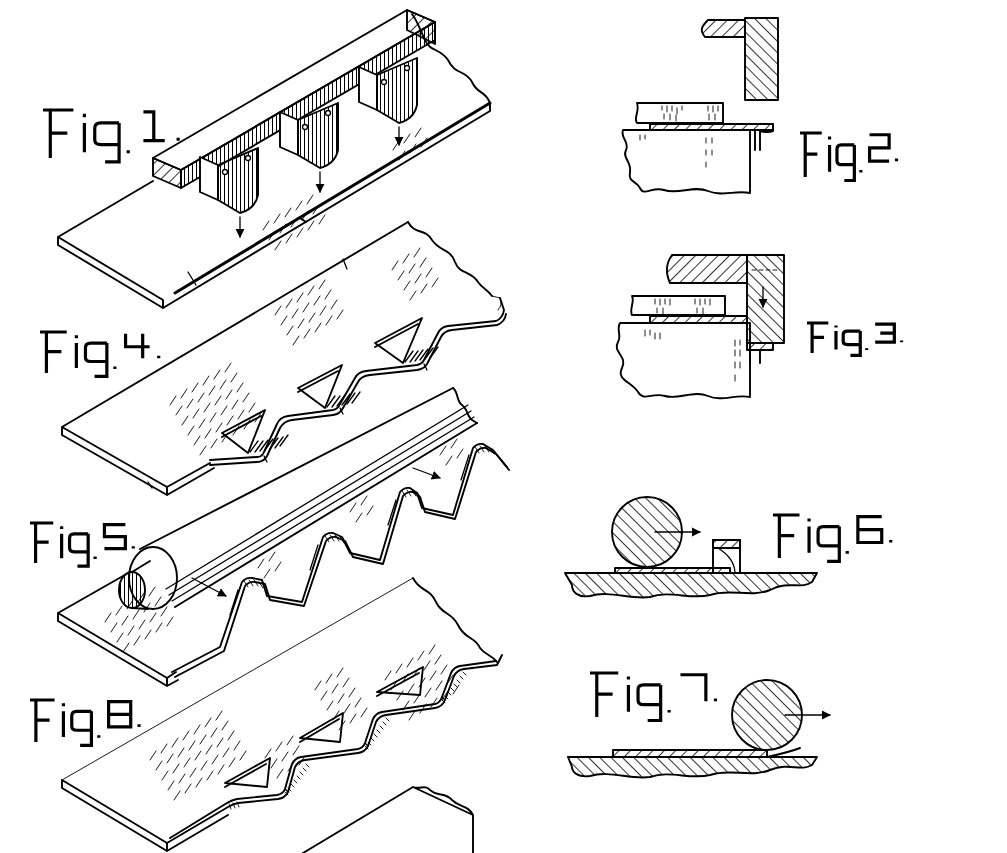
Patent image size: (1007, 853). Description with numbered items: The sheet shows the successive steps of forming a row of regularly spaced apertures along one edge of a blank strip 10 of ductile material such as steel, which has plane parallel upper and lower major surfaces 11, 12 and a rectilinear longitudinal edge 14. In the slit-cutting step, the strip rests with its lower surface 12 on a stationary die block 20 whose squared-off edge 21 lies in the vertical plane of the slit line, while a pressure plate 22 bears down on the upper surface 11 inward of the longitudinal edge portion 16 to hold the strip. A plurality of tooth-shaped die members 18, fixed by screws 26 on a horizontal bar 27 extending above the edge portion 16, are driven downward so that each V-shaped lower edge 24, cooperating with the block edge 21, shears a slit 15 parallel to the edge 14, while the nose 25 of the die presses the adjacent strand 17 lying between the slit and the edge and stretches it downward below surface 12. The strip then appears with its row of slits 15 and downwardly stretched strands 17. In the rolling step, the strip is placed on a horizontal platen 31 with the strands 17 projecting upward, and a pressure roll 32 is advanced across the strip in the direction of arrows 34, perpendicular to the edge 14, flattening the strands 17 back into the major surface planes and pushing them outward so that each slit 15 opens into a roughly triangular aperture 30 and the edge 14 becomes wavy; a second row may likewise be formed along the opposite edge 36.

In FIG. 1, the blank strip 10 is at (135, 248).
In FIG. 4, the blank strip 10 is at (135, 442).
In FIG. 5, the blank strip 10 is at (170, 649).
In FIG. 8, the blank strip 10 is at (362, 654).
In FIG. 2, the blank strip 10 is at (708, 103).
In FIG. 3, the blank strip 10 is at (678, 305).
In FIG. 6, the blank strip 10 is at (643, 573).
In FIG. 7, the blank strip 10 is at (678, 757).
In FIG. 1, the upper major surface 11 is at (192, 284).
In FIG. 4, the upper major surface 11 is at (343, 264).
In FIG. 2, the upper major surface 11 is at (658, 118).
In FIG. 3, the upper major surface 11 is at (660, 296).
In FIG. 5, the lower major surface 12 is at (76, 609).
In FIG. 8, the lower major surface 12 is at (140, 815).
In FIG. 2, the lower major surface 12 is at (623, 148).
In FIG. 3, the lower major surface 12 is at (670, 320).
In FIG. 6, the lower major surface 12 is at (698, 563).
In FIG. 7, the lower major surface 12 is at (645, 750).
In FIG. 1, the longitudinal edge 14 is at (388, 166).
In FIG. 4, the longitudinal edge 14 is at (500, 318).
In FIG. 5, the longitudinal edge 14 is at (470, 503).
In FIG. 8, the longitudinal edge 14 is at (460, 688).
In FIG. 2, the longitudinal edge 14 is at (774, 127).
In FIG. 3, the longitudinal edge 14 is at (770, 350).
In FIG. 6, the longitudinal edge 14 is at (752, 515).
In FIG. 7, the longitudinal edge 14 is at (770, 755).
In FIG. 4, the slits 15 is at (262, 409).
In FIG. 1, the longitudinal edge portion 16 is at (306, 219).
In FIG. 4, the longitudinal edge portion 16 is at (148, 482).
In FIG. 8, the longitudinal edge portion 16 is at (227, 810).
In FIG. 2, the longitudinal edge portion 16 is at (762, 132).
In FIG. 4, the strands 17 is at (437, 349).
In FIG. 5, the strands 17 is at (333, 560).
In FIG. 8, the strands 17 is at (360, 752).
In FIG. 3, the strands 17 is at (760, 353).
In FIG. 6, the strands 17 is at (733, 572).
In FIG. 7, the strands 17 is at (752, 757).
In FIG. 1, the die member 18 is at (250, 172).
In FIG. 2, the die member 18 is at (768, 60).
In FIG. 3, the die member 18 is at (787, 290).
In FIG. 2, the die block 20 is at (667, 170).
In FIG. 3, the die block 20 is at (677, 392).
In FIG. 2, the die block edge 21 is at (757, 145).
In FIG. 3, the die block edge 21 is at (742, 327).
In FIG. 2, the pressure plate 22 is at (661, 103).
In FIG. 3, the pressure plate 22 is at (632, 305).
In FIG. 1, the lower edge 24 is at (226, 205).
In FIG. 2, the lower edge 24 is at (743, 102).
In FIG. 3, the lower edge 24 is at (745, 344).
In FIG. 1, the nose 25 is at (238, 217).
In FIG. 2, the nose 25 is at (760, 101).
In FIG. 1, the screws 26 is at (246, 156).
In FIG. 3, the screws 26 is at (783, 262).
In FIG. 1, the horizontal bar 27 is at (281, 88).
In FIG. 2, the horizontal bar 27 is at (702, 33).
In FIG. 3, the horizontal bar 27 is at (688, 257).
In FIG. 8, the apertures 30 is at (262, 763).
In FIG. 6, the platen 31 is at (583, 585).
In FIG. 7, the platen 31 is at (612, 778).
In FIG. 5, the pressure roll 32 is at (342, 481).
In FIG. 6, the pressure roll 32 is at (633, 505).
In FIG. 7, the pressure roll 32 is at (770, 693).
In FIG. 5, the arrows 34 is at (425, 488).
In FIG. 8, the opposite longitudinal edge 36 is at (188, 705).